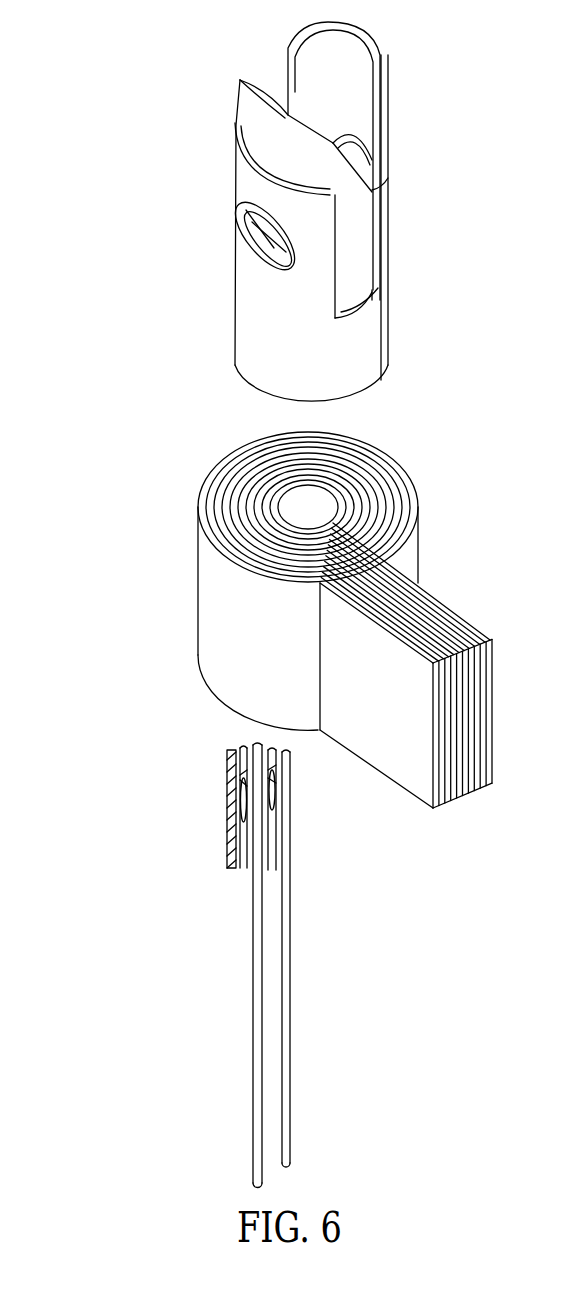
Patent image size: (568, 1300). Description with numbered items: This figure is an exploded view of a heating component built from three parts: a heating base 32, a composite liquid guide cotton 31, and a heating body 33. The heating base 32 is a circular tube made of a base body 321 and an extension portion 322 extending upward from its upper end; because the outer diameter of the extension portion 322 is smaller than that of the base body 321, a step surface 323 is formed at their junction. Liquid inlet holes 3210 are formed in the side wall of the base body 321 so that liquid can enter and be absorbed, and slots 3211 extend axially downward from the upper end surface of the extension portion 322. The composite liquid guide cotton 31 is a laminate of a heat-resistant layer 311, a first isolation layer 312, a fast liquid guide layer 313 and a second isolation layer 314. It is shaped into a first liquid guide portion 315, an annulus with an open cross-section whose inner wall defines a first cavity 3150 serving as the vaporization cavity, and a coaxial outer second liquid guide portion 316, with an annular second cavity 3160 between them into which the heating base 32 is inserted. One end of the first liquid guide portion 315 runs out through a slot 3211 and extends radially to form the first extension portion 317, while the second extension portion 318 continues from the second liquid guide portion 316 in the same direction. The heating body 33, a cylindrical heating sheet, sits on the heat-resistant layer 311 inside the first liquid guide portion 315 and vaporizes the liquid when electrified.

The composite liquid guide cotton 31 is at (83, 352).
The heat-resistant layer 311 is at (197, 510).
The first isolation layer 312 is at (210, 493).
The fast liquid guide layer 313 is at (237, 467).
The second isolation layer 314 is at (268, 462).
The first liquid guide portion 315 is at (352, 478).
The first cavity 3150 is at (308, 500).
The second liquid guide portion 316 is at (415, 498).
The first extension portion 317 is at (433, 597).
The second extension portion 318 is at (450, 637).
The second cavity 3160 is at (262, 553).
The heating base 32 is at (308, 211).
The base body 321 is at (267, 323).
The extension portion 322 is at (257, 120).
The step surface 323 is at (243, 168).
The liquid inlet hole 3210 is at (257, 252).
The slot 3211 is at (358, 240).
The heating body 33 is at (225, 805).